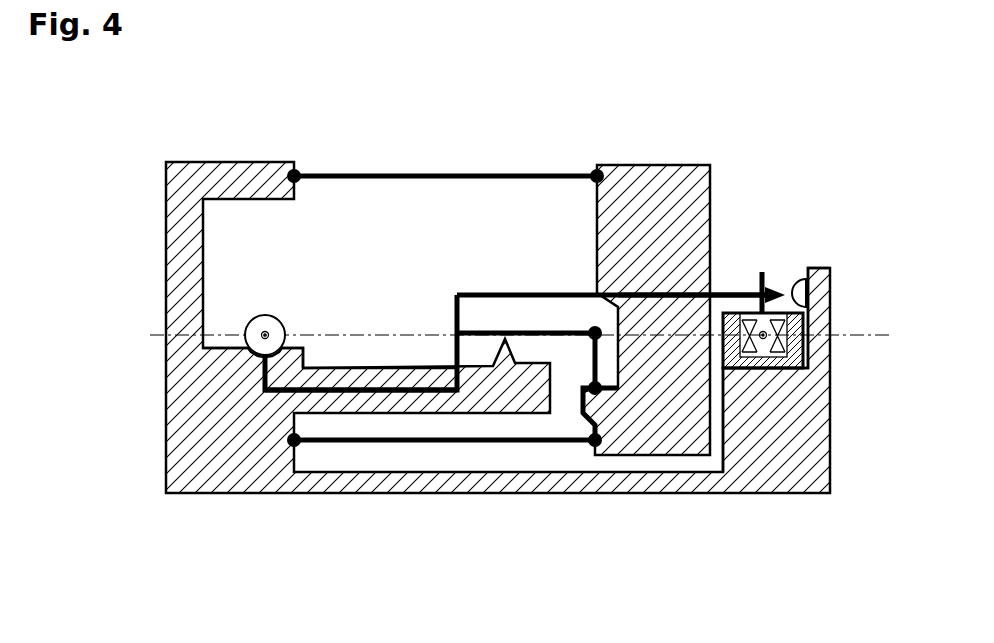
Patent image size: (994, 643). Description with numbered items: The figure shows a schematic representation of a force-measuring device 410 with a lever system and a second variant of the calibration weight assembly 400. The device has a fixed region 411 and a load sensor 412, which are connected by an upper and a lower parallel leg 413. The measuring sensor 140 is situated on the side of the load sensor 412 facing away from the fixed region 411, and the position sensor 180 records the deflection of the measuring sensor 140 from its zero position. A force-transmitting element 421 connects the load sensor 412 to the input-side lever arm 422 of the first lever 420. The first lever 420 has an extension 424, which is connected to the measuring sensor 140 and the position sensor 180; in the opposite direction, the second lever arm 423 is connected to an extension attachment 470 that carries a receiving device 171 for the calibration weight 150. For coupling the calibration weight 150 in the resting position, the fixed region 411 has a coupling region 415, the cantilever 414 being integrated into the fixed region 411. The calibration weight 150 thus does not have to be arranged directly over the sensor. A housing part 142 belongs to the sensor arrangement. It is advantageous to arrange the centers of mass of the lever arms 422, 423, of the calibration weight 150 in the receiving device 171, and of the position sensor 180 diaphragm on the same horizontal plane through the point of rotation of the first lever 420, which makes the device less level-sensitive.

The calibration weight assembly 400 is at (818, 112).
The force-measuring device 410 is at (299, 113).
The fixed region 411 is at (248, 469).
The load sensor 412 is at (682, 236).
The parallel leg 413 is at (467, 177).
The cantilever 414 is at (243, 362).
The coupling region 415 is at (232, 338).
The first lever 420 is at (522, 270).
The force-transmitting element 421 is at (597, 360).
The input-side lever arm 422 is at (567, 335).
The second lever arm 423 is at (483, 338).
The extension 424 is at (642, 298).
The extension attachment 470 is at (283, 391).
The calibration weight 150 is at (267, 318).
The receiving device 171 is at (263, 332).
The position sensor 180 is at (785, 262).
The spring contact housing 142 is at (802, 318).
The measuring sensor 140 is at (782, 387).